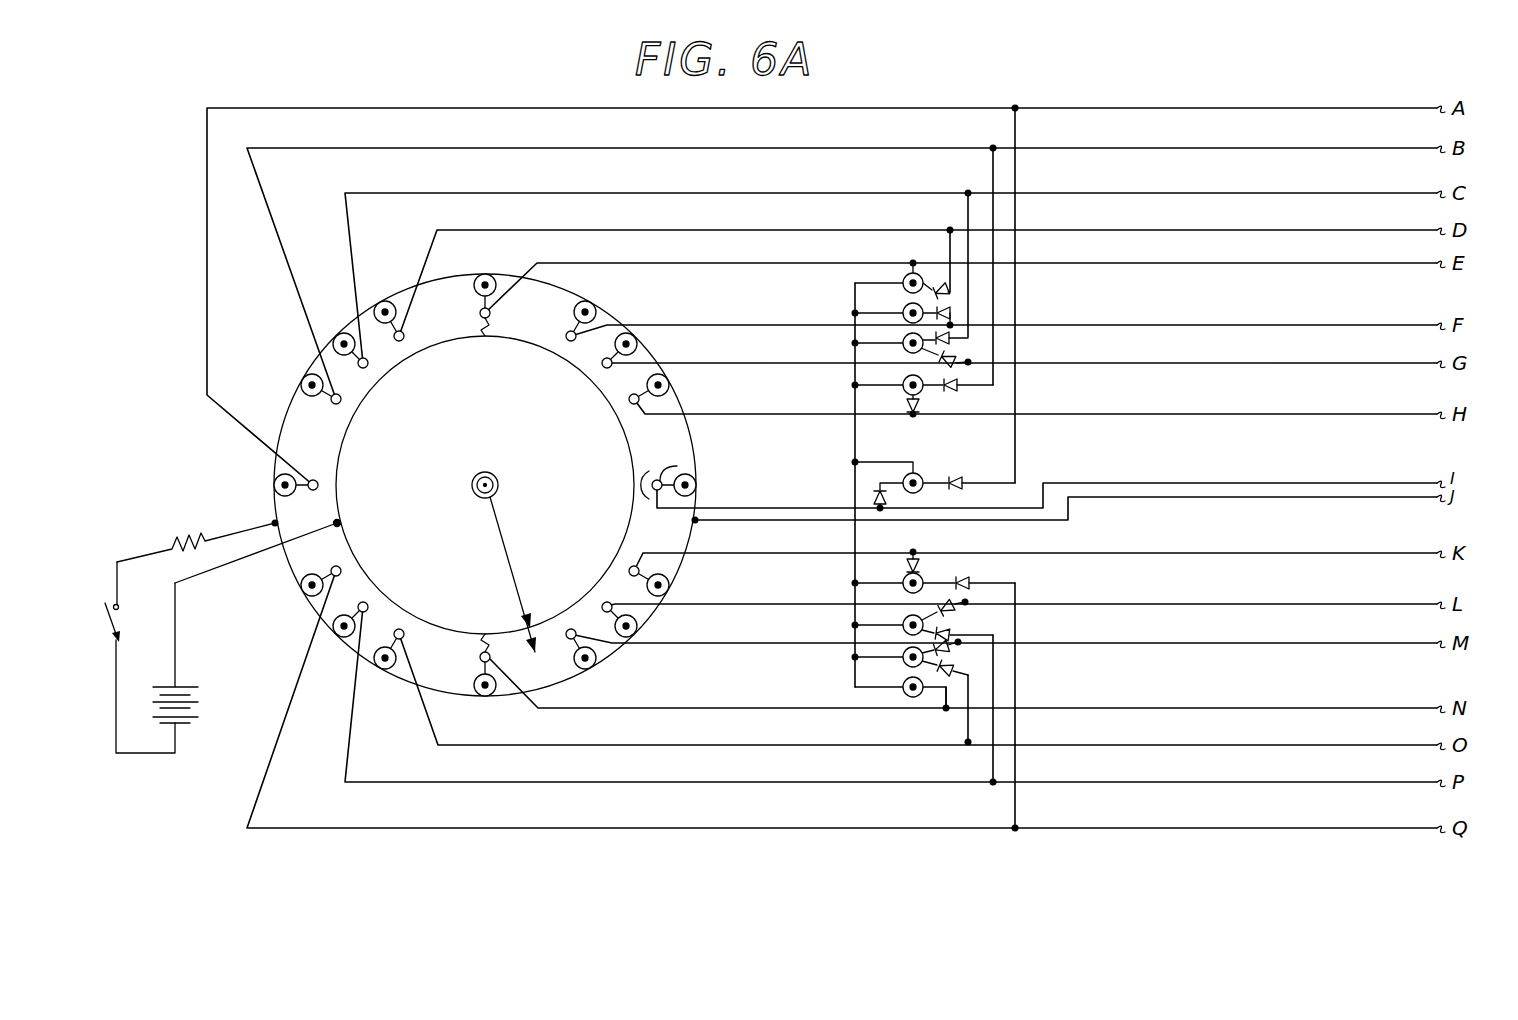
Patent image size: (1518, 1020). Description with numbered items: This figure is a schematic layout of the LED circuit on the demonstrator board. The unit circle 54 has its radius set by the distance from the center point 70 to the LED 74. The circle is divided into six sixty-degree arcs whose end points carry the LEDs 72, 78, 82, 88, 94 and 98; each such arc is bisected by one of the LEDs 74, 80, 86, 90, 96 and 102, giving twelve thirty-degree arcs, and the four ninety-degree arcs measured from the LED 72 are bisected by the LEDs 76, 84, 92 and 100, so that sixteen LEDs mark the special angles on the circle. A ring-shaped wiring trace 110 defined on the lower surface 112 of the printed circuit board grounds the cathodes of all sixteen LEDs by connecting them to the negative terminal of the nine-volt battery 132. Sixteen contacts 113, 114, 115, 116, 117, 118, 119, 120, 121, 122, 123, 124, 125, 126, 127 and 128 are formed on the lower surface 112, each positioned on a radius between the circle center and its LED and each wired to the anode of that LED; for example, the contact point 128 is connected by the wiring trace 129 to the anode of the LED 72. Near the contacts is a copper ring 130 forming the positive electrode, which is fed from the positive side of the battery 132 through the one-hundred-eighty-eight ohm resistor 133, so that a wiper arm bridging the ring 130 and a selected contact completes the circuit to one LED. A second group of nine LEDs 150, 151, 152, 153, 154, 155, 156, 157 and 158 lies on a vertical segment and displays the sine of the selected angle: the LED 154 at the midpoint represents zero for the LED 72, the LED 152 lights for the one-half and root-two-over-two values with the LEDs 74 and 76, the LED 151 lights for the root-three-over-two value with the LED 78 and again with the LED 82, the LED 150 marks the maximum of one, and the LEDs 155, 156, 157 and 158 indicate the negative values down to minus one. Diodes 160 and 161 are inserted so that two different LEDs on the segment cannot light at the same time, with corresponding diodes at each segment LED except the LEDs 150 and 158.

The unit circle 54 is at (446, 700).
The center point 70 is at (488, 473).
The LED 72 is at (696, 485).
The LED 74 is at (669, 385).
The LED 76 is at (637, 344).
The LED 78 is at (592, 303).
The LED 80 is at (486, 274).
The LED 82 is at (383, 301).
The LED 84 is at (336, 336).
The LED 86 is at (302, 381).
The LED 88 is at (274, 485).
The LED 90 is at (303, 592).
The LED 92 is at (335, 634).
The LED 94 is at (386, 669).
The LED 96 is at (487, 696).
The LED 98 is at (594, 664).
The LED 100 is at (637, 626).
The LED 102 is at (668, 585).
The wiring trace 110 is at (692, 441).
The lower surface 112 is at (641, 478).
The contact 113 is at (630, 404).
The contact 114 is at (603, 368).
The contact 115 is at (567, 341).
The contact 116 is at (482, 336).
The contact 117 is at (402, 341).
The contact 118 is at (368, 367).
The contact 119 is at (341, 402).
The contact 120 is at (319, 485).
The contact 121 is at (341, 572).
The contact 122 is at (368, 606).
The contact 123 is at (403, 631).
The contact 124 is at (488, 637).
The contact 125 is at (567, 630).
The contact 126 is at (603, 602).
The contact 127 is at (630, 567).
The contact point 128 is at (652, 488).
The wiring trace 129 is at (680, 466).
The copper ring 130 is at (341, 523).
The battery 132 is at (185, 724).
The resistor 133 is at (190, 538).
The LED 150 is at (903, 280).
The LED 151 is at (903, 311).
The LED 152 is at (903, 341).
The LED 153 is at (903, 383).
The LED 154 is at (903, 480).
The LED 155 is at (903, 581).
The LED 156 is at (903, 624).
The LED 157 is at (903, 656).
The LED 158 is at (903, 689).
The diode 160 is at (935, 283).
The diode 161 is at (953, 313).